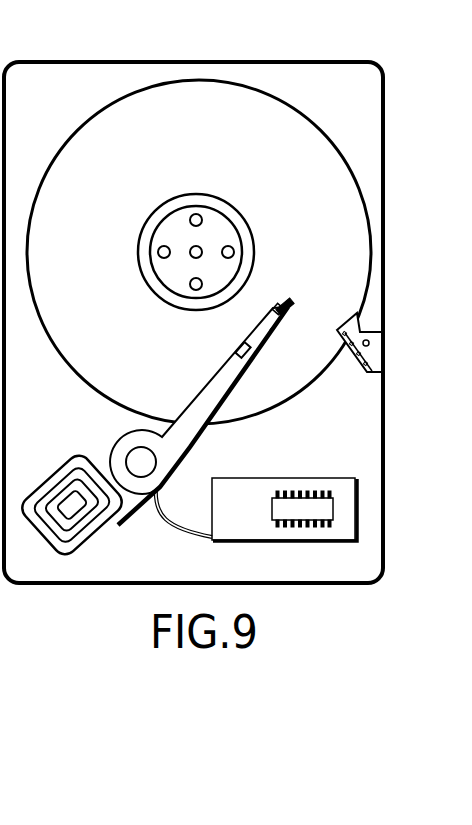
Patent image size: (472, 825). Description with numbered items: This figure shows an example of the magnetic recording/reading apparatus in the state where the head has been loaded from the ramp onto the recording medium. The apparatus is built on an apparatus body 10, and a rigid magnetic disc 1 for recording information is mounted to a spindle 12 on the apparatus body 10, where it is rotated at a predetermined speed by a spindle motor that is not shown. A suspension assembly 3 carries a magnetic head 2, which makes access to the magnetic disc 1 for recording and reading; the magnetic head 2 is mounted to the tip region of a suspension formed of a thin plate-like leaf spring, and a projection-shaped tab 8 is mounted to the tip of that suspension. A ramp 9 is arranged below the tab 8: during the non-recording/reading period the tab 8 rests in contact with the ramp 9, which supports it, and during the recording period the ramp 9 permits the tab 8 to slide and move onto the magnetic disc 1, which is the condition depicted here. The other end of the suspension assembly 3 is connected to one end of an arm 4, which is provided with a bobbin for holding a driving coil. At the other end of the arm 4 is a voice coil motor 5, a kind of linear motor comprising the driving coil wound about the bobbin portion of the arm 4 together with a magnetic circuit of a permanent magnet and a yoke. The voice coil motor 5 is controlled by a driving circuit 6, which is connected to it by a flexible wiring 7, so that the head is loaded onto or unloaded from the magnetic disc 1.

The magnetic disc 1 is at (76, 150).
The magnetic head 2 is at (281, 303).
The suspension assembly 3 is at (294, 308).
The arm 4 is at (195, 434).
The voice coil motor 5 is at (72, 456).
The driving circuit 6 is at (297, 506).
The flexible wiring 7 is at (150, 513).
The tab 8 is at (290, 300).
The ramp 9 is at (367, 372).
The apparatus body 10 is at (314, 67).
The spindle 12 is at (165, 236).